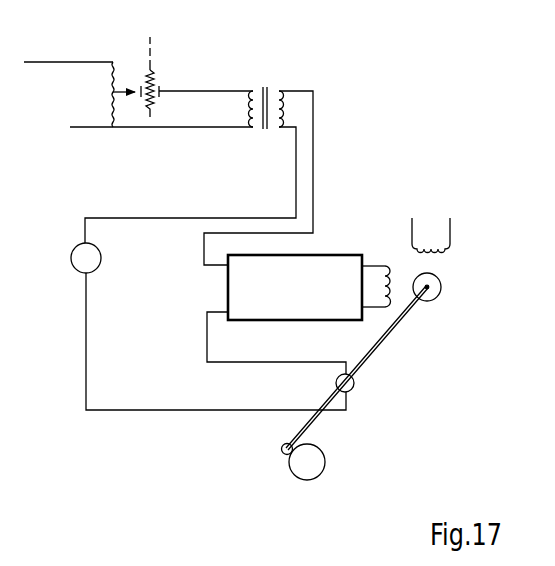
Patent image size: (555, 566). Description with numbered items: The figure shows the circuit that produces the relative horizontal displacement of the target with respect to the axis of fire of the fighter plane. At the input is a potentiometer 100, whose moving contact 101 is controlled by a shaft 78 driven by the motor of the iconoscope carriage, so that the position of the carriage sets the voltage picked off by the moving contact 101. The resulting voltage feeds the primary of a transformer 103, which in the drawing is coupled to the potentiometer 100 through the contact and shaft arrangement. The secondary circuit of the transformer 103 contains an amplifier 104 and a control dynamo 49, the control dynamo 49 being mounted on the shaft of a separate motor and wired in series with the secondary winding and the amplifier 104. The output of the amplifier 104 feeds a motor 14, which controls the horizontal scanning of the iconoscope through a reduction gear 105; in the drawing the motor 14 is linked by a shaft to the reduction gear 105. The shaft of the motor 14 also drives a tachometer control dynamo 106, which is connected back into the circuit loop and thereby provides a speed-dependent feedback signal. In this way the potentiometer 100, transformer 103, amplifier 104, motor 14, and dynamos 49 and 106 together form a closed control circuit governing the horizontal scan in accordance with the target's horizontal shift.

The potentiometer 100 is at (109, 86).
The moving contact 101 is at (133, 88).
The shaft 78 is at (154, 56).
The transformer 103 is at (269, 82).
The control dynamo 49 is at (72, 272).
The amplifier 104 is at (327, 265).
The motor 14 is at (441, 297).
The tachometer control dynamo 106 is at (356, 380).
The reduction gear 105 is at (292, 478).